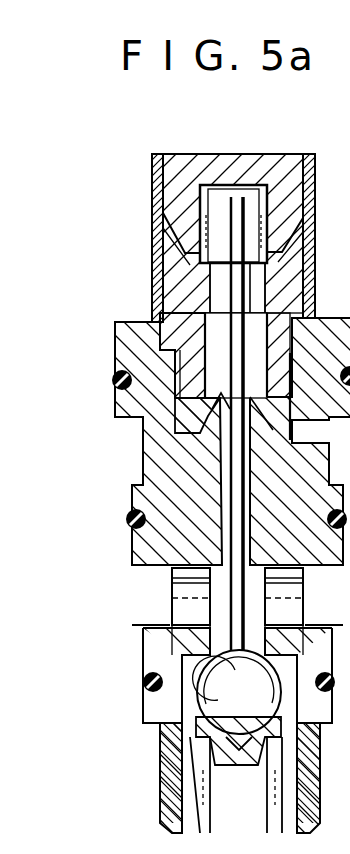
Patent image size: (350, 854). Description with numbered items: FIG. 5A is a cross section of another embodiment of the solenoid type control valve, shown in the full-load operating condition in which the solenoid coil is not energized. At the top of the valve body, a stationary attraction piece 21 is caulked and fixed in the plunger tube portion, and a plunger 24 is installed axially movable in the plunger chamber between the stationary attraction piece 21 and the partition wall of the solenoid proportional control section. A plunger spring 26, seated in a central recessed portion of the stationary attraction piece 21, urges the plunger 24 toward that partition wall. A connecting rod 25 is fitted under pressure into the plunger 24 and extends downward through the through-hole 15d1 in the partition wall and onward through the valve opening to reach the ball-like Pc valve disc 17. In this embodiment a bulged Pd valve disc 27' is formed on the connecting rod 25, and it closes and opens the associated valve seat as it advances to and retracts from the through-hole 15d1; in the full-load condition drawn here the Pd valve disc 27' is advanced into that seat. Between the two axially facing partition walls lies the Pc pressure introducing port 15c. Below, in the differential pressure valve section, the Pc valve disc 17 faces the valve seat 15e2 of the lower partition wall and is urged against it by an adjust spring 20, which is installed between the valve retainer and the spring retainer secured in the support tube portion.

The stationary attraction piece 21 is at (182, 201).
The plunger spring 26 is at (203, 236).
The plunger 24 is at (180, 278).
The Pd valve disc 27' is at (166, 423).
The through-hole 15d1 is at (247, 458).
The Pc pressure introducing port 15c is at (172, 588).
The connecting rod 25 is at (302, 587).
The valve seat 15e2 is at (150, 652).
The Pc valve disc 17 is at (205, 698).
The adjust spring 20 is at (200, 776).